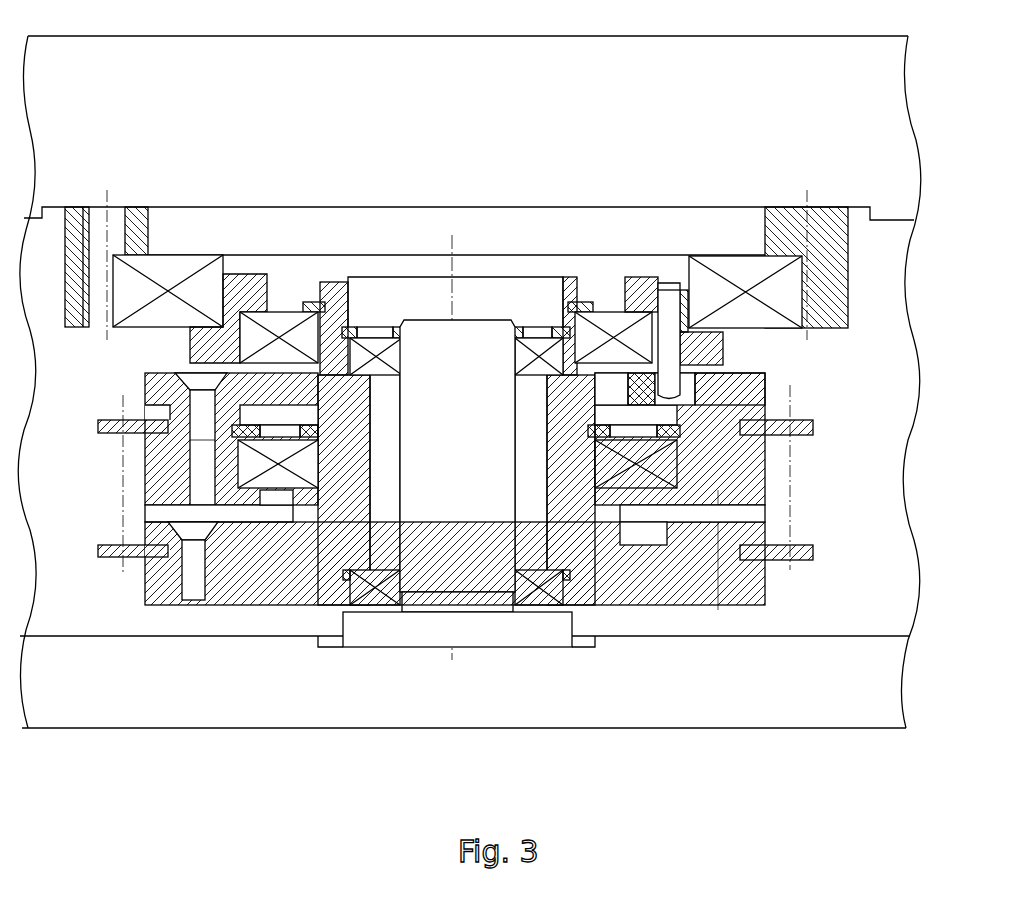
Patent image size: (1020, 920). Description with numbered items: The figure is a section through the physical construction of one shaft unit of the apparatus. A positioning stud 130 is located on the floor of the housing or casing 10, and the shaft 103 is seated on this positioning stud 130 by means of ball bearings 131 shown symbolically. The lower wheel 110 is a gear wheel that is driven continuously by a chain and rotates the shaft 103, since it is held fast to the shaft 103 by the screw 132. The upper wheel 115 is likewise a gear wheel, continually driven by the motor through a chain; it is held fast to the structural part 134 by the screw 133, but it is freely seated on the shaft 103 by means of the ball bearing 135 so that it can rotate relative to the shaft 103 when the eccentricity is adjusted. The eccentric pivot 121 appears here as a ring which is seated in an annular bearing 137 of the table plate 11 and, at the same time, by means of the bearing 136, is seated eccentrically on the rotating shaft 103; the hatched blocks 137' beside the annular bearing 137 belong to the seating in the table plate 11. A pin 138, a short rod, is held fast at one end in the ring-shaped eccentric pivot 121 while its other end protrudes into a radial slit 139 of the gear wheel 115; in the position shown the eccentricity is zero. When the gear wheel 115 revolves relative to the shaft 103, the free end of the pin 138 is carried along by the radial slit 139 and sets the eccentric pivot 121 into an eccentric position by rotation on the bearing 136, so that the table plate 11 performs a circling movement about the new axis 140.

The housing or casing 10 is at (910, 262).
The table plate 11 is at (443, 155).
The shaft 103 is at (340, 310).
The wheel 110 is at (107, 552).
The wheel 115 is at (102, 432).
The eccentric pivot 121 is at (243, 290).
The positioning stud 130 is at (483, 492).
The ball bearings 131 is at (537, 350).
The screw 132 is at (198, 570).
The screw 133 is at (198, 385).
The structural part 134 is at (722, 460).
The ball bearing 135 is at (277, 472).
The bearing 136 is at (280, 325).
The annular bearing 137 is at (457, 249).
The bearing block 137' is at (443, 244).
The pin 138 is at (675, 308).
The radial slit 139 is at (690, 392).
The new axis 140 is at (445, 293).